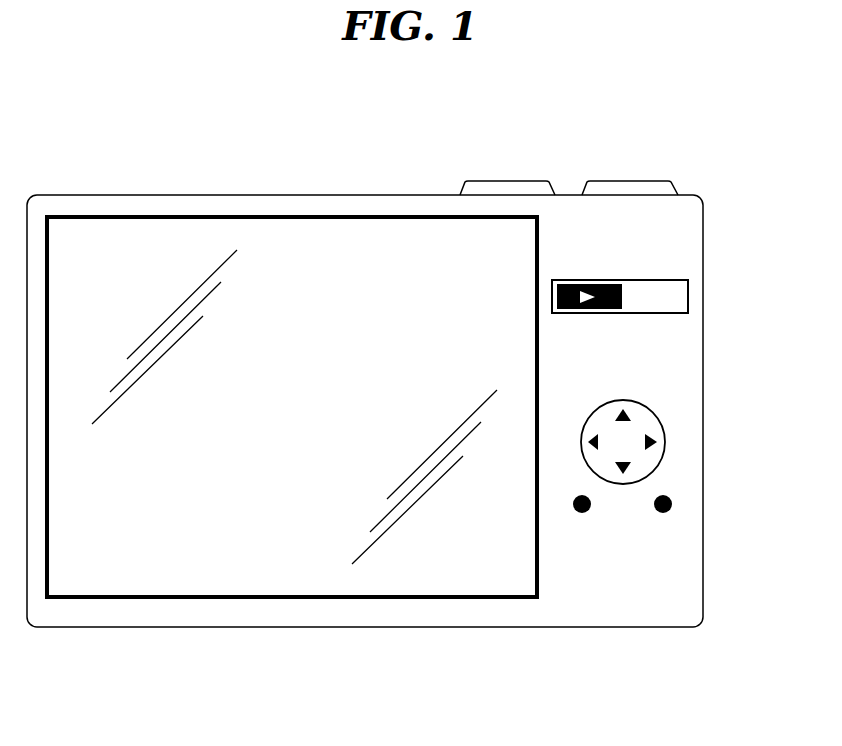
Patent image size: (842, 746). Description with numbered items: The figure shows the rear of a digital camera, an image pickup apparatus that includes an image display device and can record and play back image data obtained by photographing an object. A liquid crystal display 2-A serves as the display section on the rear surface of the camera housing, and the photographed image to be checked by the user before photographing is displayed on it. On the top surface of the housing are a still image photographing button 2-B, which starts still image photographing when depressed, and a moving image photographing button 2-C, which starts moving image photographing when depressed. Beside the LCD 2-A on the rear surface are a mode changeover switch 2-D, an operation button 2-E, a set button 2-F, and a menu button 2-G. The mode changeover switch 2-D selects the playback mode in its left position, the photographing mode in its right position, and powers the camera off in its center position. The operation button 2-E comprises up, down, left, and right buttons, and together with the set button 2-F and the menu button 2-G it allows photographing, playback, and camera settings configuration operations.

The liquid crystal display (LCD) 2-A is at (137, 262).
The still image photographing button 2-B is at (507, 178).
The moving image photographing button 2-C is at (627, 178).
The mode changeover switch 2-D is at (655, 308).
The operation button 2-E is at (667, 442).
The set button 2-F is at (573, 505).
The menu button 2-G is at (672, 504).